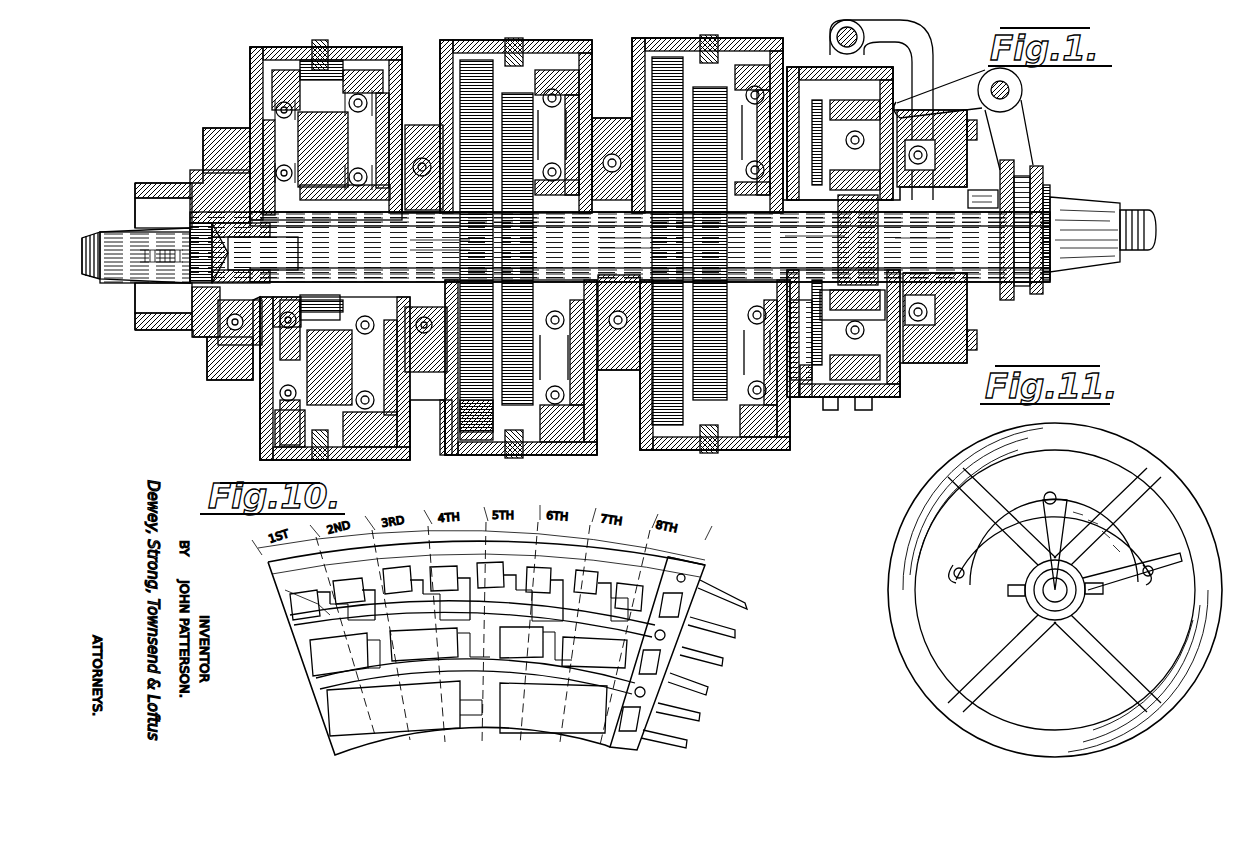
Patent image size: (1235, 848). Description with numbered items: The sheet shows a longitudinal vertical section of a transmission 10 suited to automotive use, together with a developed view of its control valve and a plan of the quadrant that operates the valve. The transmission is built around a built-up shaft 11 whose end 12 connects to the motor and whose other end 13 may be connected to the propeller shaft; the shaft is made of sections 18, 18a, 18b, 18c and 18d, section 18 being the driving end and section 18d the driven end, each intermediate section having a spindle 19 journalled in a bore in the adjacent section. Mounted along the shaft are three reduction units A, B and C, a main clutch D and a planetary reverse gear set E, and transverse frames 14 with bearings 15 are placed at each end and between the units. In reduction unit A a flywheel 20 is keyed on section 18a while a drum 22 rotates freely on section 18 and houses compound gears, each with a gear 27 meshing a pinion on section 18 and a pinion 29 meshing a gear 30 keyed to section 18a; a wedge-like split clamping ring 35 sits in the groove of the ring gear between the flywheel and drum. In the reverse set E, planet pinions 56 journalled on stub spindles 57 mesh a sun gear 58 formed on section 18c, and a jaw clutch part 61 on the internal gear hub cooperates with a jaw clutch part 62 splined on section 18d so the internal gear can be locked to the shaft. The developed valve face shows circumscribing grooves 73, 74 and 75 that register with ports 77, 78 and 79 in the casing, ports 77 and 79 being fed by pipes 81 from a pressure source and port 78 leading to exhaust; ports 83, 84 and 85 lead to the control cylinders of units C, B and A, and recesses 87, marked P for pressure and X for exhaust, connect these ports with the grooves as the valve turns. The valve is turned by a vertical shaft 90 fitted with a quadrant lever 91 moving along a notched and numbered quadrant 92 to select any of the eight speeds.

In FIG. 1, the transmission 10 is at (762, 450).
In FIG. 1, the built-up shaft 11 is at (95, 280).
In FIG. 1, the end of the shaft 12 is at (118, 232).
In FIG. 1, the other end of the shaft 13 is at (1108, 203).
In FIG. 1, the transverse frames 14 is at (446, 400).
In FIG. 1, the bearings 15 is at (428, 335).
In FIG. 1, the shaft section 18 is at (178, 222).
In FIG. 1, the shaft section 18a is at (415, 224).
In FIG. 1, the shaft section 18b is at (606, 222).
In FIG. 1, the shaft section 18c is at (815, 235).
In FIG. 1, the shaft section 18d is at (922, 238).
In FIG. 1, the spindle 19 is at (244, 253).
In FIG. 1, the flywheel 20 is at (565, 40).
In FIG. 1, the drum 22 is at (250, 55).
In FIG. 1, the gear 27 is at (288, 424).
In FIG. 1, the pinion 29 is at (324, 249).
In FIG. 1, the gear 30 is at (323, 302).
In FIG. 1, the split clamping ring 35 is at (322, 40).
In FIG. 1, the planet pinions 56 is at (850, 410).
In FIG. 1, the stub spindles 57 is at (805, 455).
In FIG. 1, the sun gear 58 is at (858, 222).
In FIG. 1, the jaw clutch part 61 is at (968, 250).
In FIG. 1, the jaw clutch part 62 is at (1050, 272).
In FIG. 1, the groove 74 is at (930, 363).
In FIG. 10, the groove 74 is at (300, 636).
In FIG. 1, the reduction unit A is at (290, 47).
In FIG. 1, the reduction unit B is at (488, 40).
In FIG. 1, the reduction unit C is at (665, 38).
In FIG. 1, the main clutch D is at (800, 67).
In FIG. 1, the planetary reverse gear set E is at (897, 103).
In FIG. 10, the groove 73 is at (288, 585).
In FIG. 10, the groove 75 is at (318, 690).
In FIG. 10, the port 77 is at (684, 575).
In FIG. 10, the port 78 is at (665, 635).
In FIG. 10, the port 79 is at (645, 692).
In FIG. 10, the pipes 81 is at (740, 603).
In FIG. 10, the port 83 is at (683, 605).
In FIG. 10, the port 84 is at (660, 662).
In FIG. 10, the port 85 is at (633, 718).
In FIG. 10, the recesses 87 is at (292, 602).
In FIG. 11, the vertical shaft 90 is at (1090, 585).
In FIG. 11, the quadrant lever 91 is at (1168, 562).
In FIG. 11, the quadrant 92 is at (1068, 500).